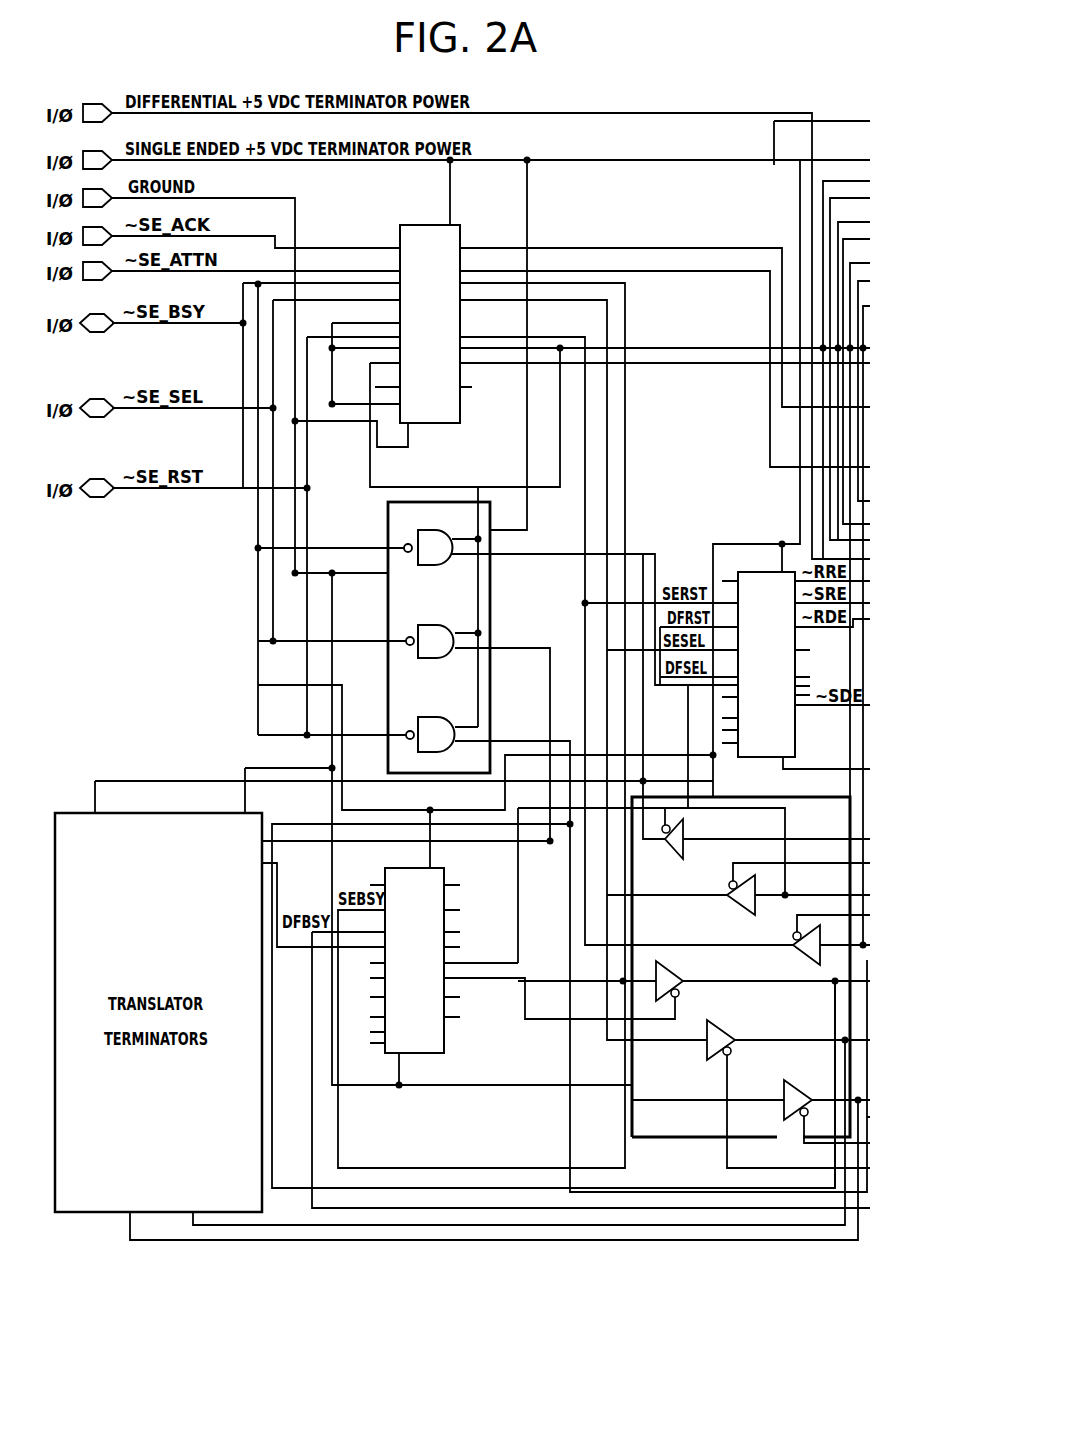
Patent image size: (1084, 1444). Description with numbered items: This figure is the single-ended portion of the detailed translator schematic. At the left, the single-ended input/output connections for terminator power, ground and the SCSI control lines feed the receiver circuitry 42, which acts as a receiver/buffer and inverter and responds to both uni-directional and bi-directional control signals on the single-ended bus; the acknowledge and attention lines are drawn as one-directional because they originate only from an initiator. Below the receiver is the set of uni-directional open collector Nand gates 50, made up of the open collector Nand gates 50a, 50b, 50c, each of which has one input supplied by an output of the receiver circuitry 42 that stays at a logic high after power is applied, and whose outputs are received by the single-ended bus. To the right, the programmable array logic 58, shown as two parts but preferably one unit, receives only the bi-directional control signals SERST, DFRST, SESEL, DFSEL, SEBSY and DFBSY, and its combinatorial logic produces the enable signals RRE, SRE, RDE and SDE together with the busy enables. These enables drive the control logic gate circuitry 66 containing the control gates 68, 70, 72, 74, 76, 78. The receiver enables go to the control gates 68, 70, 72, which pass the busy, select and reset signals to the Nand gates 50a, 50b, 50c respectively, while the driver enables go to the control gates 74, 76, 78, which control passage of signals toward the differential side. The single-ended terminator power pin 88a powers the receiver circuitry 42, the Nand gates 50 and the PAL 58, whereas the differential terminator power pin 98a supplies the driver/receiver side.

The receiver circuitry 42 is at (460, 238).
The uni-directional open collector Nand circuitry 50 is at (470, 616).
The open collector Nand gate 50a is at (430, 535).
The open collector Nand gate 50b is at (432, 630).
The open collector Nand gate 50c is at (432, 722).
The programmable array logic 58 is at (366, 1112).
The control logic gate circuitry 66 is at (741, 988).
The control gate 68 is at (673, 845).
The control gate 70 is at (738, 903).
The control gate 72 is at (810, 955).
The control gate 74 is at (678, 985).
The control gate 76 is at (705, 1045).
The control gate 78 is at (795, 1100).
The single-ended terminator power pin 88a is at (575, 160).
The differential terminator power pin 98a is at (555, 113).